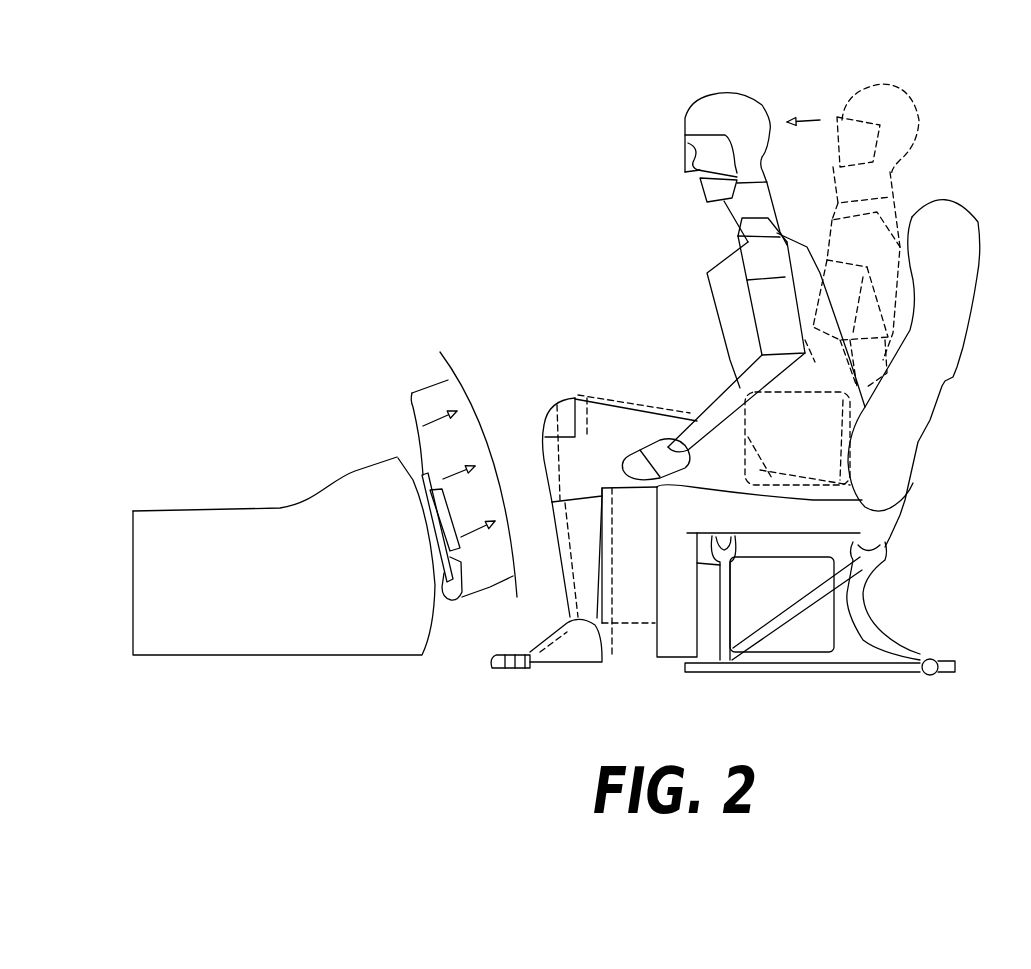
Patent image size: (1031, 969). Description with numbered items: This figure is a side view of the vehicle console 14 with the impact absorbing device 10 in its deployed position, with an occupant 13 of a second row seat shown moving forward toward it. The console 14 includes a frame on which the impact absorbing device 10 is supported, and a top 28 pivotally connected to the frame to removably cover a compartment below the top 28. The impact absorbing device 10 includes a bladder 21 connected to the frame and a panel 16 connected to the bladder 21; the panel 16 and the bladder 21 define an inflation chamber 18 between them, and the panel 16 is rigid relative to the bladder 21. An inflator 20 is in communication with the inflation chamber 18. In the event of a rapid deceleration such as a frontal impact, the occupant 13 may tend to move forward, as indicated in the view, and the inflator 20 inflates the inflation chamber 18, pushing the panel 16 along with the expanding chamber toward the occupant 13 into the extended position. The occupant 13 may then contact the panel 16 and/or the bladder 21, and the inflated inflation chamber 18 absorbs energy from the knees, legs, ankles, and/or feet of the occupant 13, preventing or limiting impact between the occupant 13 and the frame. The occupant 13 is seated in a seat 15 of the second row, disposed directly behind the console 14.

The impact absorbing device 10 is at (398, 300).
The occupant 13 is at (738, 93).
The vehicle console 14 is at (153, 572).
The seat 15 is at (968, 323).
The panel 16 is at (490, 457).
The inflation chamber 18 is at (422, 390).
The inflator 20 is at (465, 597).
The bladder 21 is at (424, 523).
The top 28 is at (227, 510).